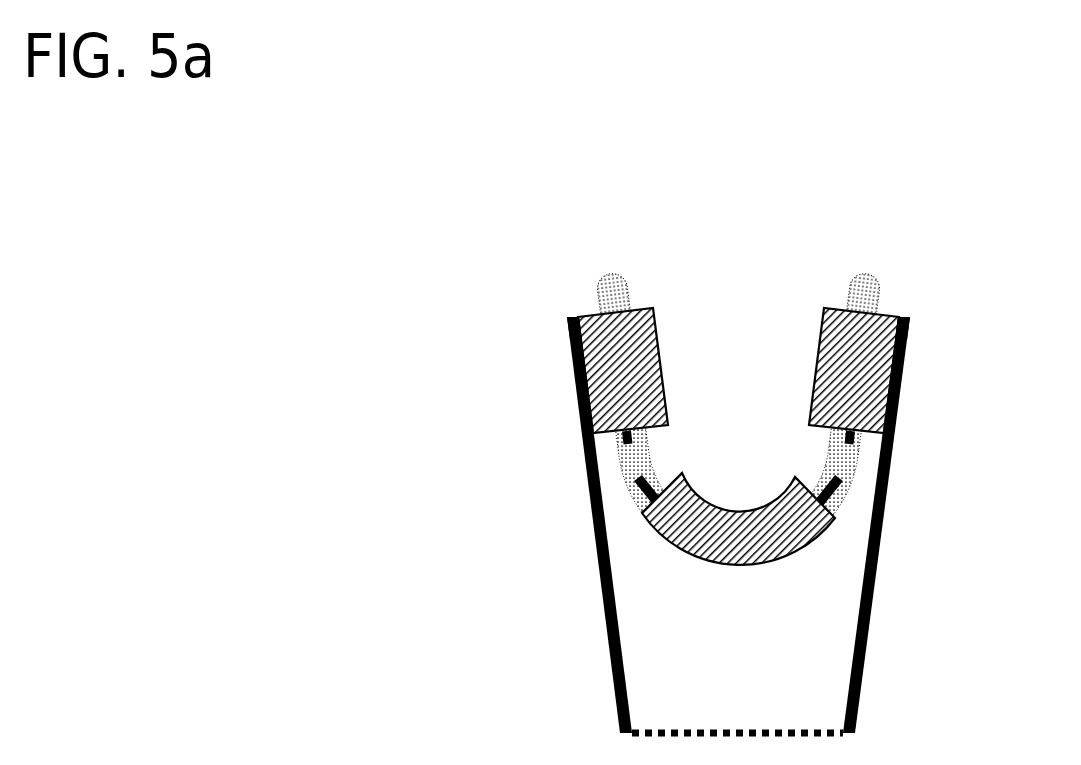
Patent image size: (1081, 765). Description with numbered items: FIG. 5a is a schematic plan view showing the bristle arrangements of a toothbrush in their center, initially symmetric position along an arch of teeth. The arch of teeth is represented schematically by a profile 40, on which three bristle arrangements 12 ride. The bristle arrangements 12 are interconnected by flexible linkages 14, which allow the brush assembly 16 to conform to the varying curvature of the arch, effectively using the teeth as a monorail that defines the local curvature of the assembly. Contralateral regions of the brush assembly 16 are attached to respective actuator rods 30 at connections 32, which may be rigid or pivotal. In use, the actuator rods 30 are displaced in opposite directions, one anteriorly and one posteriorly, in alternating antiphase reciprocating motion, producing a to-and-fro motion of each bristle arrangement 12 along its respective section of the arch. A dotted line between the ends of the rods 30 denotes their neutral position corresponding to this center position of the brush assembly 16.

The bristle arrangement 12 is at (637, 351).
The flexible linkage 14 is at (619, 479).
The brush assembly 16 is at (927, 257).
The actuator rod 30 is at (592, 629).
The connection 32 is at (553, 310).
The profile 40 is at (609, 276).